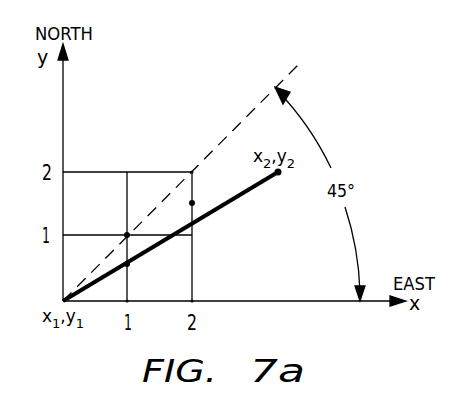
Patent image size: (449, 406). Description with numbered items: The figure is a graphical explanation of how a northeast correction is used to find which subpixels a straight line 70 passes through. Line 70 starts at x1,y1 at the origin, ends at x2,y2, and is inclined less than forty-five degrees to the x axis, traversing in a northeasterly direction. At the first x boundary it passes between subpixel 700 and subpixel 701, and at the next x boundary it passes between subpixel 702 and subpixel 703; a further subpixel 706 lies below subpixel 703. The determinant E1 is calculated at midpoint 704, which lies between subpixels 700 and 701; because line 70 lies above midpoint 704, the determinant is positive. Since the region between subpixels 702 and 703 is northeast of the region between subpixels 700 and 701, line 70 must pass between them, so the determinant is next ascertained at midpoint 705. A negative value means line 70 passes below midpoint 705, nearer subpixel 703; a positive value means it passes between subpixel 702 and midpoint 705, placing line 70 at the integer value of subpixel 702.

The straight line 70 is at (258, 187).
The subpixel 700 is at (126, 234).
The subpixel 701 is at (128, 302).
The subpixel 702 is at (191, 171).
The subpixel 703 is at (194, 235).
The midpoint 704 is at (129, 266).
The midpoint 705 is at (194, 202).
The subpixel 706 is at (194, 300).